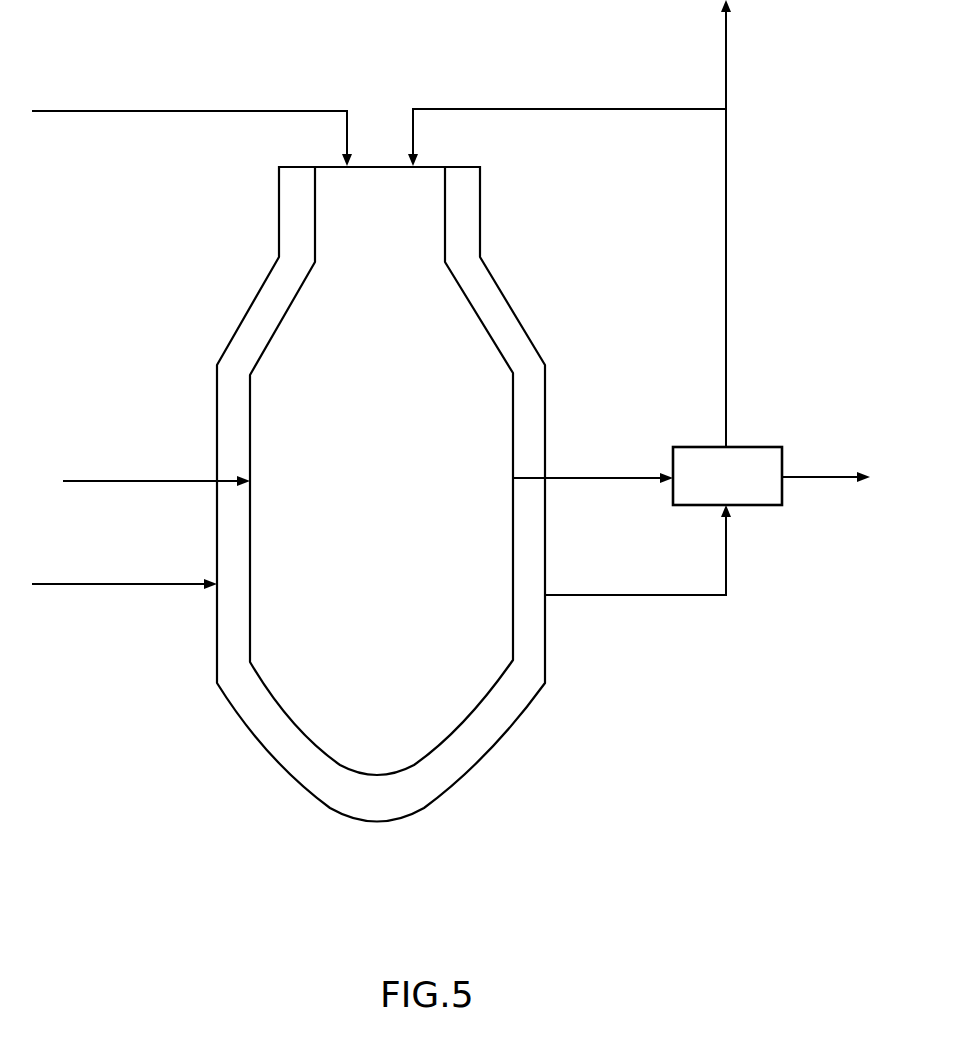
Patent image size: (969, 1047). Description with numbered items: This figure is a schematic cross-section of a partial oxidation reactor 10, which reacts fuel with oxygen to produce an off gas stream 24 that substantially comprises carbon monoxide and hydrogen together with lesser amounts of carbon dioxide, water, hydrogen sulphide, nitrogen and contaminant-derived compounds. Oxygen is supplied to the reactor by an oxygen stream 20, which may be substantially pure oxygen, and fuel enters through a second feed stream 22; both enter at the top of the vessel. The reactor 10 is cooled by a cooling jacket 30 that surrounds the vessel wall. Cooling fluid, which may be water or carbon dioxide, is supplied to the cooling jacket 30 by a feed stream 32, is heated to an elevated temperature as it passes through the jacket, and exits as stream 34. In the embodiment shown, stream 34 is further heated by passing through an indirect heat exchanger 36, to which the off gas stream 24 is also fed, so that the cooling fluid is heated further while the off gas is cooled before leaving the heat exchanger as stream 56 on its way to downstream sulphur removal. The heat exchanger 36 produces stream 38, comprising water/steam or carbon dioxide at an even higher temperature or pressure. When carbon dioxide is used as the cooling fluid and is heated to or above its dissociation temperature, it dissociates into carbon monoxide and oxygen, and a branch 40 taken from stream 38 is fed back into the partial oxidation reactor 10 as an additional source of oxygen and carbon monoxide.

The partial oxidation reactor 10 is at (470, 722).
The oxygen stream 20 is at (108, 111).
The feed stream 22 is at (117, 481).
The off gas stream 24 is at (566, 478).
The cooling jacket 30 is at (397, 827).
The feed stream 32 is at (88, 584).
The stream 34 is at (623, 595).
The indirect heat exchanger 36 is at (748, 455).
The stream 38 is at (726, 75).
The branch 40 is at (555, 85).
The product outlet stream 56 is at (797, 477).